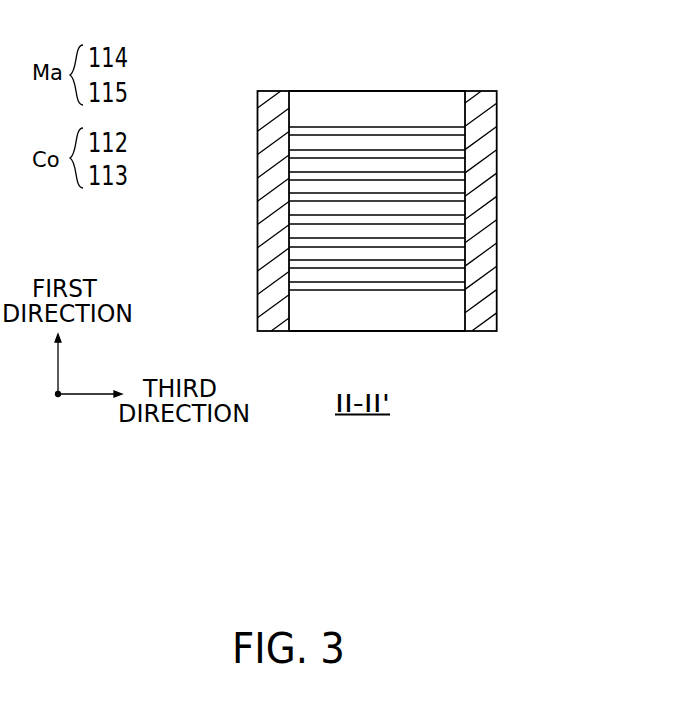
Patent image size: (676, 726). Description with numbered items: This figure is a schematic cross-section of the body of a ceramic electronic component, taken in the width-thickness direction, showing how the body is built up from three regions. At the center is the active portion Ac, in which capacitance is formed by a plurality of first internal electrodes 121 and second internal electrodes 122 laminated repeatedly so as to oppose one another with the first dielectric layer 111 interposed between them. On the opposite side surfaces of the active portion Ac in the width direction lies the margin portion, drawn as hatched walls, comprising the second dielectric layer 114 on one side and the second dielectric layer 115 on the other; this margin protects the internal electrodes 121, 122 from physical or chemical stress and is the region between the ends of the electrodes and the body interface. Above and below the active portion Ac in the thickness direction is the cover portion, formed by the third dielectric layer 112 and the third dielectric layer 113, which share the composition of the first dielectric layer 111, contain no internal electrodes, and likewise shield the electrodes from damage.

The first dielectric layer 111 is at (460, 143).
The 3-1-th dielectric layer 112 is at (383, 105).
The 3-2-th dielectric layer 113 is at (468, 305).
The 2-1-th dielectric layer 114 is at (273, 251).
The 2-2-th dielectric layer 115 is at (490, 235).
The first internal electrode 121 is at (466, 118).
The second internal electrode 122 is at (466, 152).
The active portion Ac is at (289, 211).